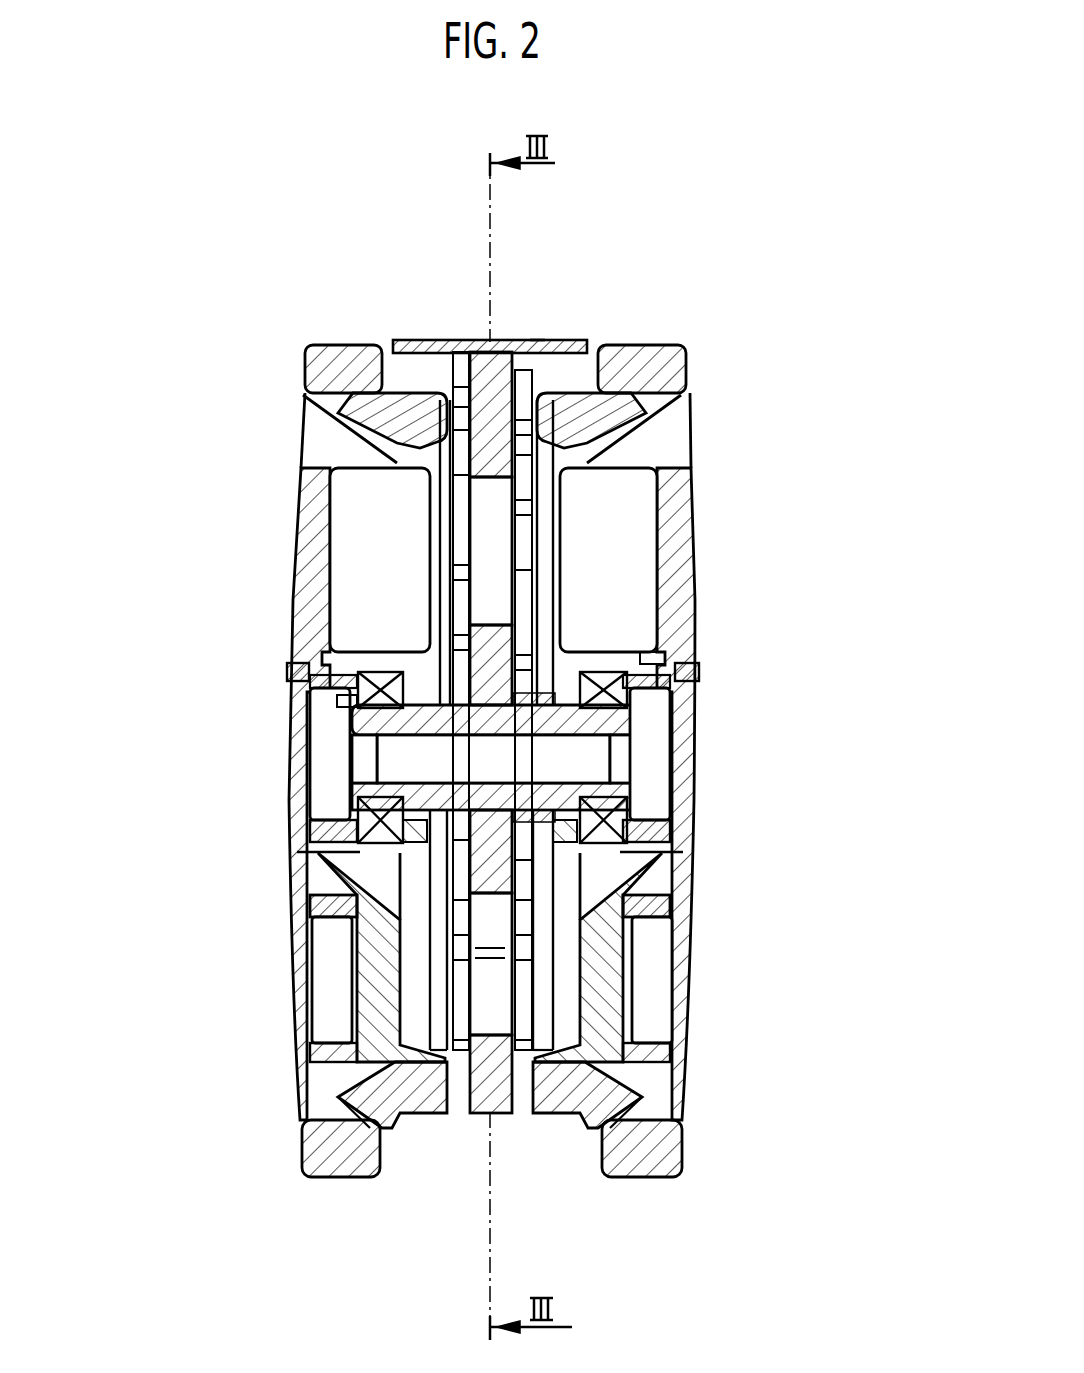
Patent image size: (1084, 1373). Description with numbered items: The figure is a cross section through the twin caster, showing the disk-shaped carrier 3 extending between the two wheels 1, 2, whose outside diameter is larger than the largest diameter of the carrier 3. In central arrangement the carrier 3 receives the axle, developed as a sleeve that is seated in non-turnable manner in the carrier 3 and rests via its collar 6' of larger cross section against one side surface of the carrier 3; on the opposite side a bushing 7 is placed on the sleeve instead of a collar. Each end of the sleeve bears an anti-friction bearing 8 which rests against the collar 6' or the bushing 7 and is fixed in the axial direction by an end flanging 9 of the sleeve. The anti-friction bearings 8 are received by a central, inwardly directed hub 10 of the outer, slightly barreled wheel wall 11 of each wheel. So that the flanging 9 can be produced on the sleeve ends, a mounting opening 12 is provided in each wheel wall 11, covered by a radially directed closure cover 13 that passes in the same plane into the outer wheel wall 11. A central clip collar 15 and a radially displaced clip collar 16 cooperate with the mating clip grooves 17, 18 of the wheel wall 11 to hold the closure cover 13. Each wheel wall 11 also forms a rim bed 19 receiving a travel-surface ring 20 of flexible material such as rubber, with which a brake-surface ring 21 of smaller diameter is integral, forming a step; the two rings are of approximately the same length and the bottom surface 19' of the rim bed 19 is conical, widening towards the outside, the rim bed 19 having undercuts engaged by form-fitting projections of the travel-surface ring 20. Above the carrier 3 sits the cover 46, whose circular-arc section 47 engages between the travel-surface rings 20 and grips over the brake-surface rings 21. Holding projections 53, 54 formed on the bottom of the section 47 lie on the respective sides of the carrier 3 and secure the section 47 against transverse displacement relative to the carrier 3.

The wheel 1 is at (282, 1090).
The wheel 2 is at (704, 1087).
The carrier 3 is at (500, 632).
The collar 6' is at (275, 678).
The bushing 7 is at (697, 663).
The anti-friction bearing 8 is at (363, 843).
The end flanging 9 is at (347, 807).
The hub 10 is at (395, 640).
The wheel wall 11 is at (312, 488).
The mounting opening 12 is at (303, 838).
The closure cover 13 is at (297, 733).
The central clip collar 15 is at (297, 666).
The clip collar 16 is at (295, 1005).
The clip groove 17 is at (350, 676).
The clip groove 18 is at (297, 1057).
The rim bed 19 is at (490, 1161).
The bottom surface 19' is at (490, 1170).
The travel-surface ring 20 is at (330, 1160).
The brake-surface ring 21 is at (437, 1120).
The cover 46 is at (541, 322).
The section 47 is at (575, 332).
The holding projection 53 is at (440, 340).
The holding projection 54 is at (522, 527).